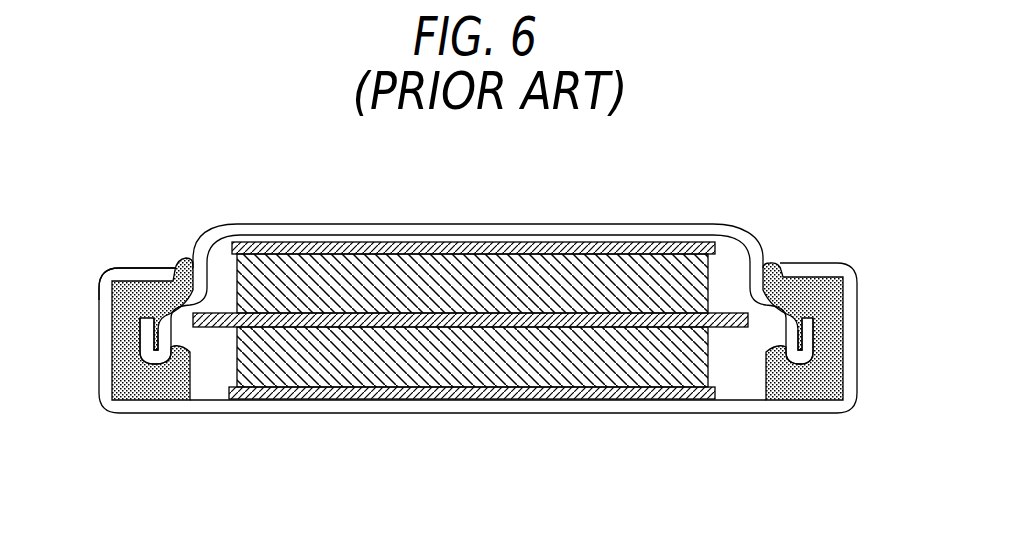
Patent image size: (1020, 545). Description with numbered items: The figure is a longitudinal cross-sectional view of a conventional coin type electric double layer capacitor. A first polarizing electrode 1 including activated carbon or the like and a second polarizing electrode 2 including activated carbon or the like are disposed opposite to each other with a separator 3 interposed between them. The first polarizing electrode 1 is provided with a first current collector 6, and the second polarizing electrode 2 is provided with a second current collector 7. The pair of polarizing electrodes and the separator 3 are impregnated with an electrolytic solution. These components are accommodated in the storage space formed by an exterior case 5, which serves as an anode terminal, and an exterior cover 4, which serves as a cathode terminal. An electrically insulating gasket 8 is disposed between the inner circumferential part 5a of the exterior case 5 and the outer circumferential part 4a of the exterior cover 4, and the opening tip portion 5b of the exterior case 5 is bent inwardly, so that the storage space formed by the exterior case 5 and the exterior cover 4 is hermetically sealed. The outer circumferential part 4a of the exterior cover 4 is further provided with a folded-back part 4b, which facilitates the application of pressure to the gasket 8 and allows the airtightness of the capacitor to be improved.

The first polarizing electrode 1 is at (523, 265).
The second polarizing electrode 2 is at (545, 402).
The separator 3 is at (748, 316).
The exterior cover 4 is at (267, 233).
The outer circumferential part of the exterior cover 4a is at (158, 333).
The folded-back part 4b is at (148, 343).
The exterior case 5 is at (272, 407).
The inner circumferential part of the exterior case 5a is at (112, 316).
The opening tip portion of the exterior case 5b is at (138, 270).
The first current collector 6 is at (395, 242).
The second current collector 7 is at (407, 402).
The gasket 8 is at (833, 317).